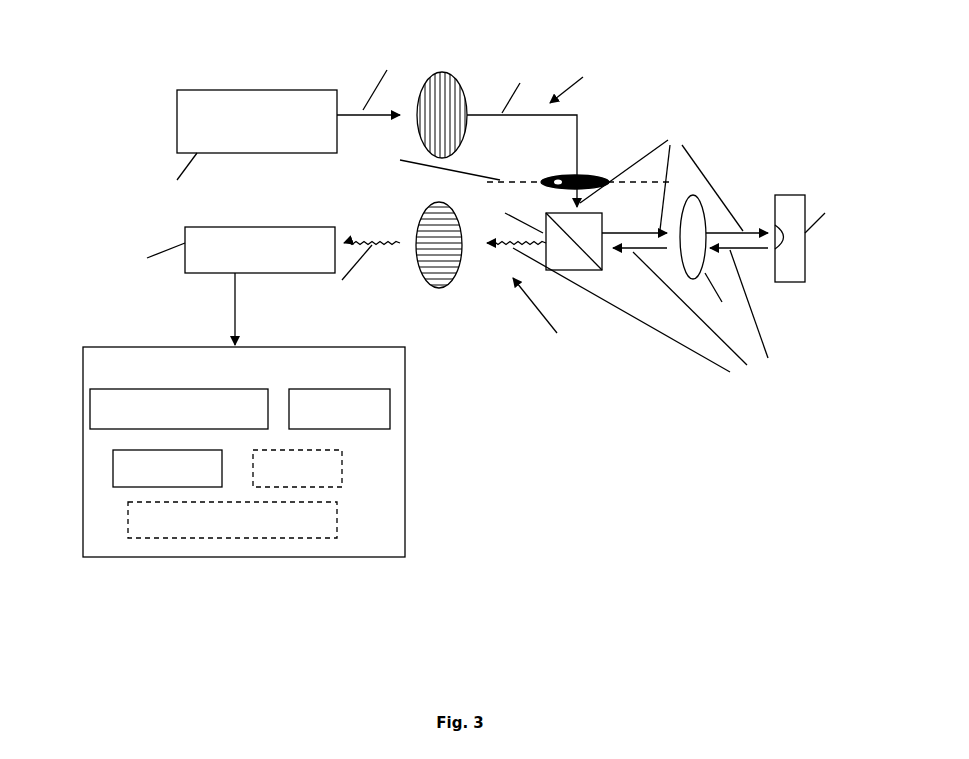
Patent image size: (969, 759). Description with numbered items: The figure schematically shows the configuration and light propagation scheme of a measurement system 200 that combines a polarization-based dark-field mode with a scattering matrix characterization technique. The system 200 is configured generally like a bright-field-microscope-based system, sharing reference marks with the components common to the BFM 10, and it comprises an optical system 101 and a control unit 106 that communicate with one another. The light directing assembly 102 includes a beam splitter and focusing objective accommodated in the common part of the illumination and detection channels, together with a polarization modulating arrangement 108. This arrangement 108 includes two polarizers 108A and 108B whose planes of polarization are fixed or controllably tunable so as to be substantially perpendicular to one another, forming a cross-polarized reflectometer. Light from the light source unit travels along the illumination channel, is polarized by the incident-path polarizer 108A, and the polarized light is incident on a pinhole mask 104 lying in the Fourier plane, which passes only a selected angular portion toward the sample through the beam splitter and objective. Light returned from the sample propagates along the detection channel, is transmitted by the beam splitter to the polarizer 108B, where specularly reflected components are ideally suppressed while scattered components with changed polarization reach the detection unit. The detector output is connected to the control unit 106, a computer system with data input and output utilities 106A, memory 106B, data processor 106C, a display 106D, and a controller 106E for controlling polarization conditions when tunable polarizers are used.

The measurement system 200 is at (117, 113).
The polarization modulating arrangement 108 is at (398, 133).
The incident-path polarizer 108A is at (453, 75).
The polarizer 108B is at (457, 273).
The light directing assembly 102 is at (603, 135).
The pinhole mask 104 is at (558, 177).
The optical system 101 is at (740, 172).
The BFM 10 is at (816, 255).
The control unit 106 is at (110, 345).
The data input and output utilities 106A is at (90, 395).
The memory 106B is at (363, 388).
The data processor 106C is at (112, 462).
The display 106D is at (342, 467).
The controller 106E is at (190, 537).